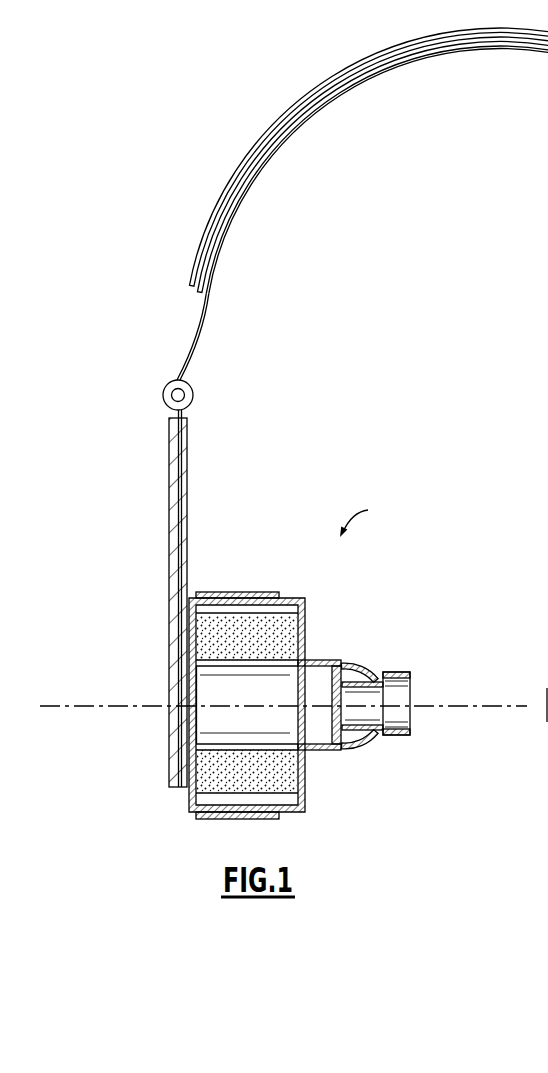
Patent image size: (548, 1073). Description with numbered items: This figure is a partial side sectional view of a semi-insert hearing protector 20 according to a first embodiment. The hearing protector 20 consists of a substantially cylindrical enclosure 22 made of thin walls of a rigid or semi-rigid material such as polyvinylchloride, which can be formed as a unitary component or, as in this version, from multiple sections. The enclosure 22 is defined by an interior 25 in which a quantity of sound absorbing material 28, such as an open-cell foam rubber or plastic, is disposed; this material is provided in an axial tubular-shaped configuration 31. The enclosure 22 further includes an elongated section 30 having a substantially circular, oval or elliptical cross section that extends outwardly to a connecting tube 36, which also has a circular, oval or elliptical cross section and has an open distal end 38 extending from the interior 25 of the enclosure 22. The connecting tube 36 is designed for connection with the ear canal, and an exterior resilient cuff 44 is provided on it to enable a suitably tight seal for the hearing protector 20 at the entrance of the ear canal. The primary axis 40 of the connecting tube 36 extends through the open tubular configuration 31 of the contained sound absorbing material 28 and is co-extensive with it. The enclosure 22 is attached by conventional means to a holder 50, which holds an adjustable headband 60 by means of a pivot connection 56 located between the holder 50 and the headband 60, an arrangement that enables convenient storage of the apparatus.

The hearing protector 20 is at (373, 524).
The enclosure 22 is at (305, 622).
The interior 25 is at (239, 612).
The sound absorbing material 28 is at (297, 784).
The elongated section 30 is at (328, 660).
The tubular-shaped configuration 31 is at (197, 683).
The connecting tube 36 is at (372, 670).
The open distal end 38 is at (383, 698).
The primary axis 40 is at (490, 707).
The exterior resilient cuff 44 is at (399, 739).
The holder 50 is at (188, 472).
The pivot connection 56 is at (189, 384).
The adjustable headband 60 is at (221, 232).